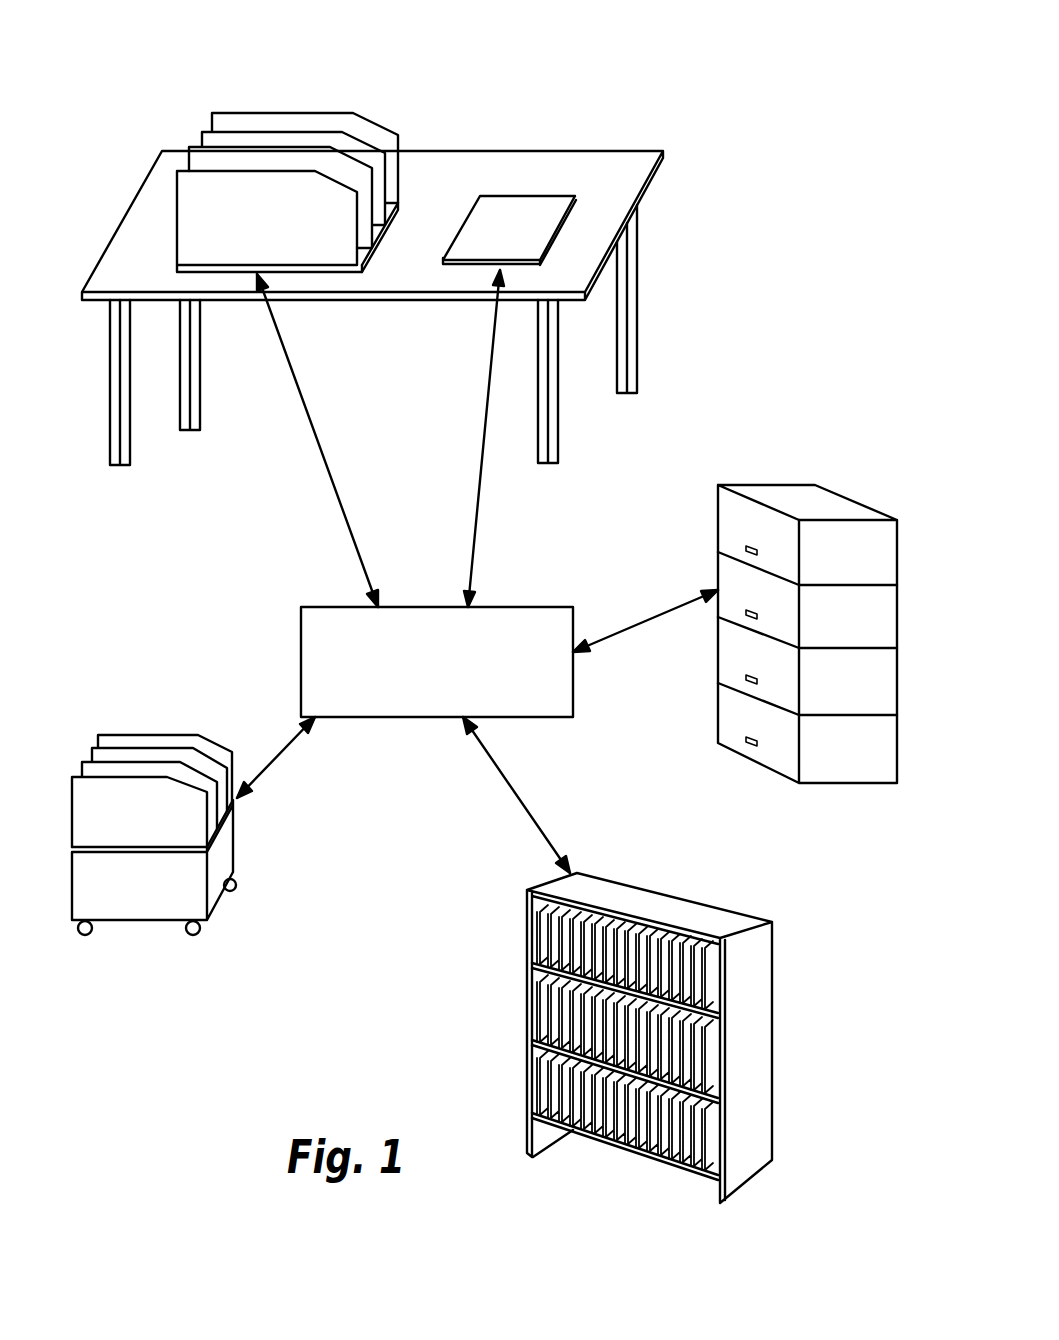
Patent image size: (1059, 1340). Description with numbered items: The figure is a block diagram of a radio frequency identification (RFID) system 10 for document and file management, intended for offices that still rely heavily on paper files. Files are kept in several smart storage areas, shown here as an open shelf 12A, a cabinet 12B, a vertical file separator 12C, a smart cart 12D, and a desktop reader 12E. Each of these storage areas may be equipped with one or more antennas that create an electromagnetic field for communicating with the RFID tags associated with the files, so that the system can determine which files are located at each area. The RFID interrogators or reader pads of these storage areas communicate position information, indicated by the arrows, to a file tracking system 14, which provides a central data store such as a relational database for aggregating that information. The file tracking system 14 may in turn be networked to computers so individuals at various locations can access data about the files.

The radio frequency identification system 10 is at (490, 67).
The open shelf 12A is at (673, 908).
The cabinet 12B is at (792, 493).
The vertical file separator 12C is at (190, 202).
The smart cart 12D is at (223, 850).
The desktop reader 12E is at (520, 213).
The file tracking system 14 is at (450, 699).